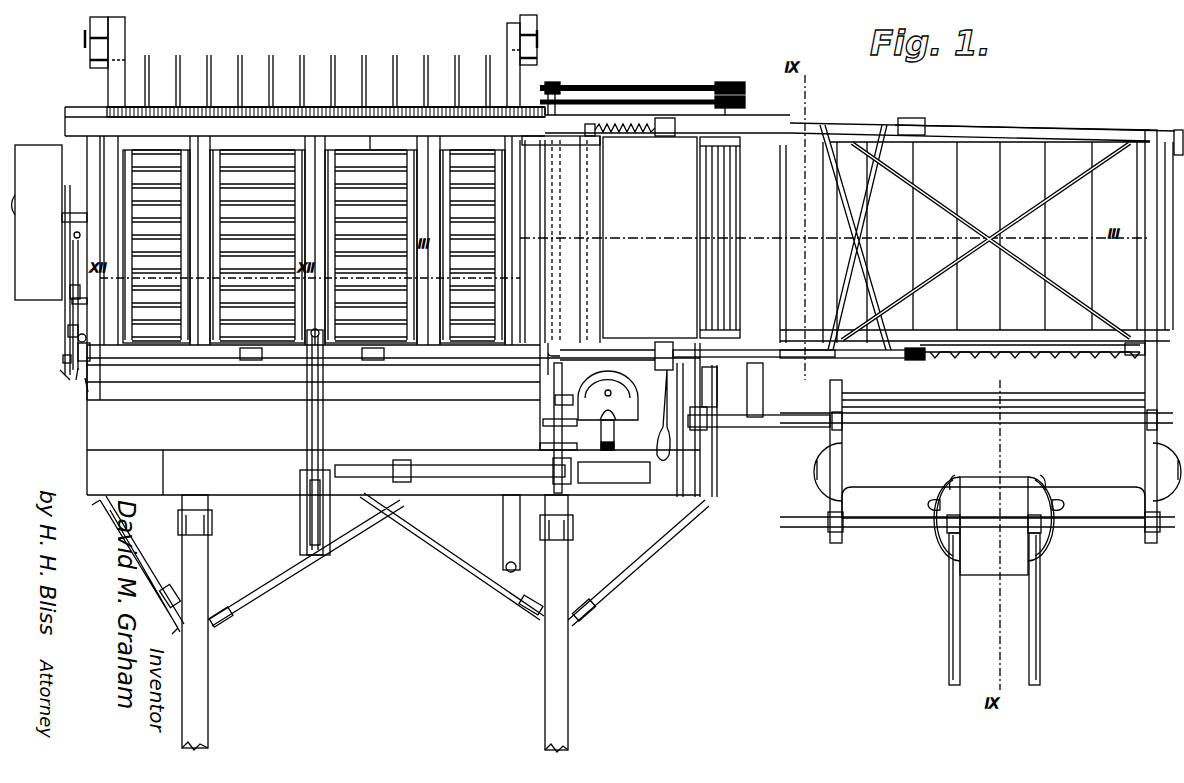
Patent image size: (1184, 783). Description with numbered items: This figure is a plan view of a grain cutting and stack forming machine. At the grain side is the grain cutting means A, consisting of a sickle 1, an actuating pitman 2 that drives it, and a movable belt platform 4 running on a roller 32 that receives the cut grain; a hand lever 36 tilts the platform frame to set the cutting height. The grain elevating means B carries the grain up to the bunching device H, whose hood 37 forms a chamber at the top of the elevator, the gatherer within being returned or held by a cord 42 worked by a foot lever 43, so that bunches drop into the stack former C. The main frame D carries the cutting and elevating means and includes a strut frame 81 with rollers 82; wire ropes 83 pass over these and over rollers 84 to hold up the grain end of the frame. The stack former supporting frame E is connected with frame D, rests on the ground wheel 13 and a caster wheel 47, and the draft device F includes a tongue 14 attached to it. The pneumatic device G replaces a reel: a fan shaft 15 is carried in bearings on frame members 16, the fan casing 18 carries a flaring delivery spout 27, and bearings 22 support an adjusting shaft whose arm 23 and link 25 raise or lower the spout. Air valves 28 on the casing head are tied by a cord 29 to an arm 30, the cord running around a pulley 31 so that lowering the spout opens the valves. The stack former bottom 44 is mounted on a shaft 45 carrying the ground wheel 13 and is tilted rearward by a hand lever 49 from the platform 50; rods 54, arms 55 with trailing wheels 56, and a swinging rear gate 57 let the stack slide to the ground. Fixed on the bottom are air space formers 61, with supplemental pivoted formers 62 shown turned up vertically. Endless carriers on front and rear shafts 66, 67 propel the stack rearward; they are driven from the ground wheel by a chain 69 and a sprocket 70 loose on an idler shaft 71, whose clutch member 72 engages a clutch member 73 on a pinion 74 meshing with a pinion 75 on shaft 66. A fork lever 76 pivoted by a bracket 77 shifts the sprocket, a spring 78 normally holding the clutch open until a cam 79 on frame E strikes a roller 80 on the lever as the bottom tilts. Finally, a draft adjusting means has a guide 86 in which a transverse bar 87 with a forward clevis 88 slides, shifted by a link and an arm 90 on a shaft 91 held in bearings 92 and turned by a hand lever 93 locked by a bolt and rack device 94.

The sickle 1 is at (1050, 355).
The actuating pitman 2 is at (575, 345).
The movable belt platform 4 is at (1067, 233).
The ground wheel 13 is at (568, 632).
The tongue 14 is at (210, 668).
The rotary fan shaft 15 is at (1098, 528).
The frame members 16 is at (832, 545).
The fan casing 18 is at (994, 526).
The bearings 22 is at (843, 425).
The arm 23 is at (825, 432).
The link 25 is at (818, 462).
The fan delivery spout 27 is at (795, 418).
The air valves 28 is at (948, 490).
The cord 29 is at (1030, 627).
The arm 30 is at (1030, 600).
The pulley 31 is at (945, 540).
The roller 32 is at (1045, 535).
The hand lever 36 is at (684, 478).
The hood 37 is at (650, 237).
The cord 42 is at (630, 352).
The foot lever 43 is at (655, 447).
The bottom of the stack former 44 is at (372, 145).
The shaft 45 is at (70, 215).
The caster wheel 47 is at (640, 132).
The hand lever 49 is at (323, 380).
The platform 50 is at (393, 419).
The rods 54 is at (305, 60).
The arms 55 is at (125, 36).
The wheels 56 is at (553, 22).
The rear wall 57 is at (225, 100).
The air space formers 61 is at (312, 170).
The supplemental air space formers 62 is at (250, 360).
The front rotary shaft 66 is at (118, 345).
The rear rotary shaft 67 is at (118, 168).
The chain 69 is at (78, 340).
The sprocket wheel 70 is at (63, 370).
The idler shaft 71 is at (63, 355).
The clutch member 72 is at (75, 382).
The clutch member 73 is at (90, 347).
The pinion 74 is at (78, 394).
The pinion 75 is at (68, 325).
The fork lever 76 is at (72, 275).
The bracket 77 is at (75, 300).
The spring 78 is at (80, 235).
The cam 79 is at (75, 257).
The roller 80 is at (74, 240).
The strut frame 81 is at (905, 118).
The rollers 82 is at (925, 120).
The flexible tension devices 83 is at (825, 120).
The rollers 84 is at (675, 136).
The guide 86 is at (445, 490).
The transverse bar 87 is at (620, 485).
The clevis 88 is at (498, 575).
The arm 90 is at (553, 475).
The longitudinal shaft 91 is at (552, 435).
The bearings 92 is at (572, 422).
The hand lever 93 is at (575, 410).
The bolt and rack device 94 is at (555, 405).
The grain cutting means A is at (960, 368).
The grain elevating means B is at (720, 220).
The stack former C is at (291, 129).
The main frame D is at (1020, 132).
The stack former supporting frame E is at (65, 123).
The draft device F is at (400, 568).
The pneumatic device G is at (993, 483).
The bunching device H is at (560, 239).